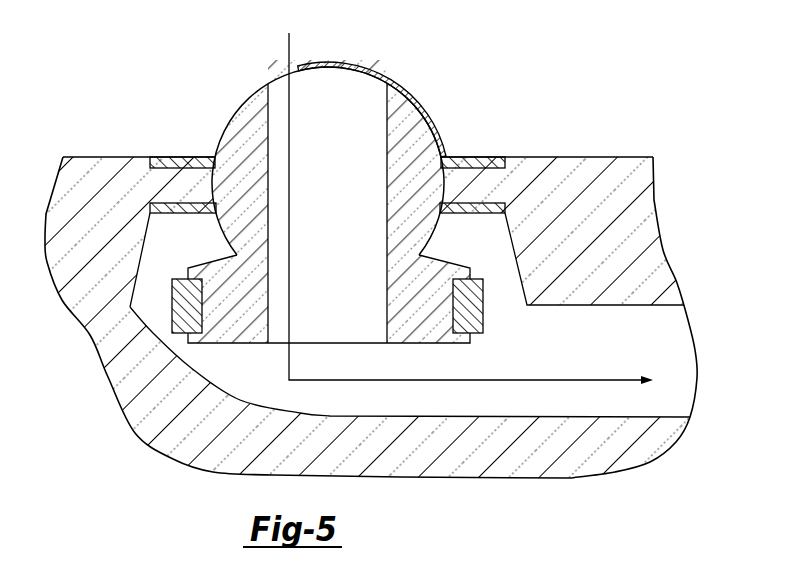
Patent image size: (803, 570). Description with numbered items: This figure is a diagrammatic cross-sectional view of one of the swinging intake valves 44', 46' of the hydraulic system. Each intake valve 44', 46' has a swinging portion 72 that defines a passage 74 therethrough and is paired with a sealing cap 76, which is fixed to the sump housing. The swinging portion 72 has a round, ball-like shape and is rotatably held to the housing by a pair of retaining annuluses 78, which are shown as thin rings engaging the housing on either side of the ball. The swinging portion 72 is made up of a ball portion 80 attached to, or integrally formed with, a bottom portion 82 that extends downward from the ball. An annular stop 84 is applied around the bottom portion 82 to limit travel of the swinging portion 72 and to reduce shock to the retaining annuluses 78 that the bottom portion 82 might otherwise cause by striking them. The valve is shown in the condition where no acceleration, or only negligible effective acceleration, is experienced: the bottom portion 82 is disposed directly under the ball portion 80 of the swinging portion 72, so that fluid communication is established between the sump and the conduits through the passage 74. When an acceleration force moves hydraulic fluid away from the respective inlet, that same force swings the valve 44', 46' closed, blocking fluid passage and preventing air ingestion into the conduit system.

The swinging portion 72 is at (238, 97).
The passage 74 is at (347, 99).
The sealing cap 76 is at (372, 68).
The intake valve 44' is at (371, 264).
The intake valve 46' is at (371, 264).
The retaining annuluses 78 is at (470, 166).
The ball portion 80 is at (245, 140).
The bottom portion 82 is at (222, 325).
The annular stop 84 is at (465, 313).